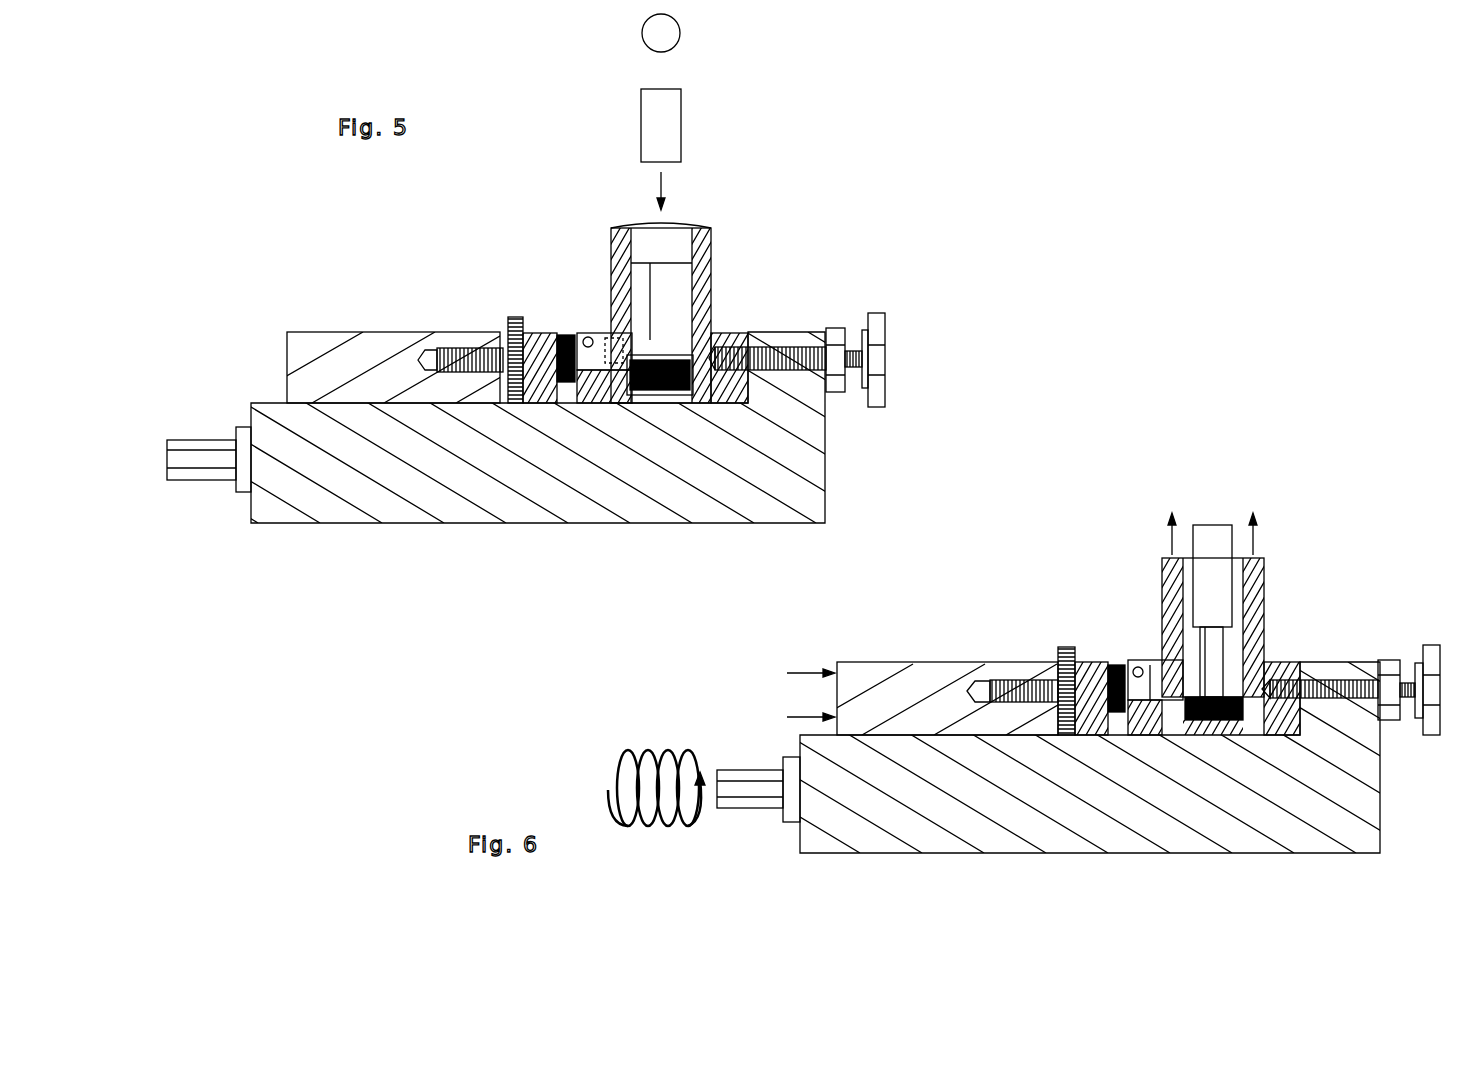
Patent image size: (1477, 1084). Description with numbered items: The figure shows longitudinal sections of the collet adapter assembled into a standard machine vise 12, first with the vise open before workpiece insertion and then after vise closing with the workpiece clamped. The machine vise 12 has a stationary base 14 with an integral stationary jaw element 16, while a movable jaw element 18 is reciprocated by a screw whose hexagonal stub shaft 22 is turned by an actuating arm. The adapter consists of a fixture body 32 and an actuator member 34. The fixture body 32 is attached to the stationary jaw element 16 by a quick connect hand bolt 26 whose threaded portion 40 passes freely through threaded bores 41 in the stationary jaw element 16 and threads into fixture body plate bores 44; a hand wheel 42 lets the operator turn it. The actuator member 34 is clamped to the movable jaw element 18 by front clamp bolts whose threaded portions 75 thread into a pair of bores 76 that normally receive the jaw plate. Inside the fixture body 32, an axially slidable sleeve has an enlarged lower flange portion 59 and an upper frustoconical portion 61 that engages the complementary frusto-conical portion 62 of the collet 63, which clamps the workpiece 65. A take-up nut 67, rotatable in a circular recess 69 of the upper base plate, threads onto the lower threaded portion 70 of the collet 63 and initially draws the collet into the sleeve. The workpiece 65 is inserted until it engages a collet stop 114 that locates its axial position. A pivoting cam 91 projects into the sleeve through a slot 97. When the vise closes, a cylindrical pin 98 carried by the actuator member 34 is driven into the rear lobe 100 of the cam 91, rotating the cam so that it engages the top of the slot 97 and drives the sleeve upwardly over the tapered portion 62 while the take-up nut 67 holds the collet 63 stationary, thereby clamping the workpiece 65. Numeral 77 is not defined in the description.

In FIG. 5, the machine vise 12 is at (344, 527).
In FIG. 6, the machine vise 12 is at (792, 835).
In FIG. 5, the stationary base 14 is at (607, 500).
In FIG. 5, the stationary jaw element 16 is at (797, 335).
In FIG. 6, the stationary jaw element 16 is at (1350, 678).
In FIG. 5, the movable jaw element 18 is at (345, 345).
In FIG. 6, the movable jaw element 18 is at (890, 668).
In FIG. 5, the hexagonal stub shaft 22 is at (196, 452).
In FIG. 6, the hexagonal stub shaft 22 is at (742, 785).
In FIG. 5, the quick connect hand bolt 26 is at (893, 346).
In FIG. 6, the quick connect hand bolt 26 is at (1435, 641).
In FIG. 5, the fixture body 32 is at (731, 290).
In FIG. 5, the actuator member 34 is at (602, 413).
In FIG. 6, the threaded portion 40 is at (1318, 672).
In FIG. 6, the threaded bores 41 is at (1342, 705).
In FIG. 6, the hand wheel 42 is at (1433, 737).
In FIG. 6, the fixture body plate bores 44 is at (1275, 690).
In FIG. 6, the enlarged lower flange portion 59 is at (1242, 737).
In FIG. 5, the upper frustoconical portion 61 is at (690, 230).
In FIG. 5, the upper frusto-conical portion 62 is at (628, 232).
In FIG. 5, the collet 63 is at (680, 271).
In FIG. 5, the workpiece 65 is at (652, 119).
In FIG. 6, the workpiece 65 is at (1212, 538).
In FIG. 5, the take-up nut 67 is at (700, 395).
In FIG. 6, the take-up nut 67 is at (1182, 705).
In FIG. 6, the circular recesses 69 is at (1340, 745).
In FIG. 5, the lower threaded portion 70 is at (655, 395).
In FIG. 6, the lower threaded portion 70 is at (1208, 722).
In FIG. 5, the threaded portions 75 is at (437, 362).
In FIG. 5, the bores 76 is at (470, 348).
In FIG. 5, the threaded shank 77 is at (466, 372).
In FIG. 6, the pivoting cam 91 is at (1153, 672).
In FIG. 5, the slot 97 is at (634, 343).
In FIG. 6, the slot 97 is at (1150, 722).
In FIG. 5, the cylindrical pin 98 is at (560, 335).
In FIG. 5, the rear lobe 100 is at (600, 338).
In FIG. 6, the collet stop 114 is at (1165, 625).